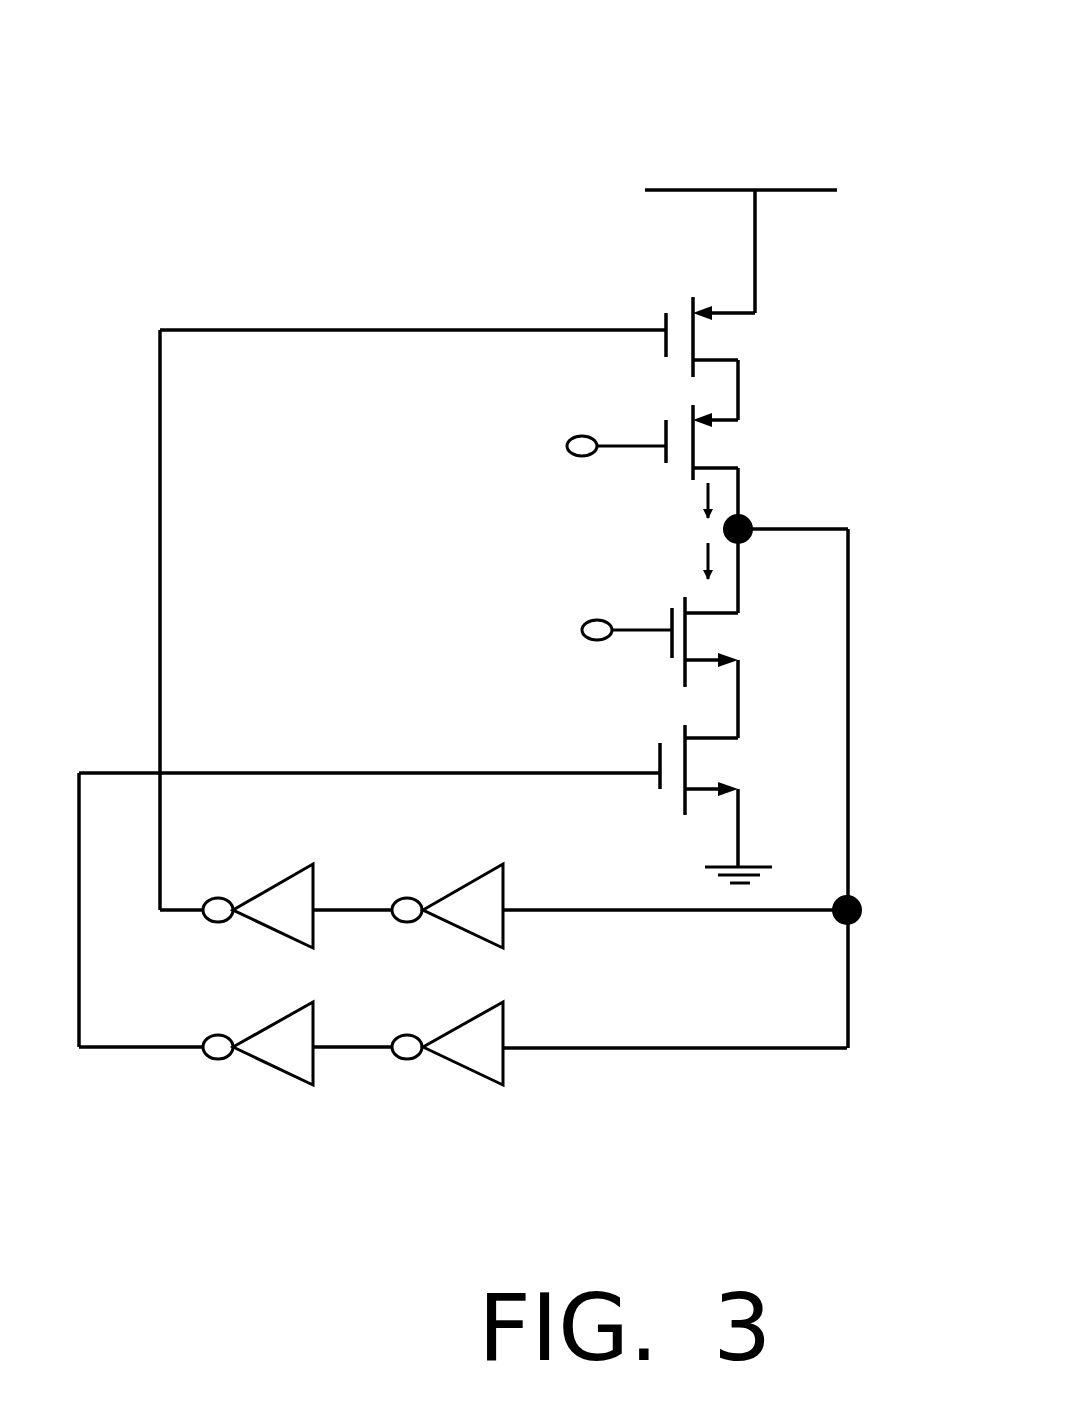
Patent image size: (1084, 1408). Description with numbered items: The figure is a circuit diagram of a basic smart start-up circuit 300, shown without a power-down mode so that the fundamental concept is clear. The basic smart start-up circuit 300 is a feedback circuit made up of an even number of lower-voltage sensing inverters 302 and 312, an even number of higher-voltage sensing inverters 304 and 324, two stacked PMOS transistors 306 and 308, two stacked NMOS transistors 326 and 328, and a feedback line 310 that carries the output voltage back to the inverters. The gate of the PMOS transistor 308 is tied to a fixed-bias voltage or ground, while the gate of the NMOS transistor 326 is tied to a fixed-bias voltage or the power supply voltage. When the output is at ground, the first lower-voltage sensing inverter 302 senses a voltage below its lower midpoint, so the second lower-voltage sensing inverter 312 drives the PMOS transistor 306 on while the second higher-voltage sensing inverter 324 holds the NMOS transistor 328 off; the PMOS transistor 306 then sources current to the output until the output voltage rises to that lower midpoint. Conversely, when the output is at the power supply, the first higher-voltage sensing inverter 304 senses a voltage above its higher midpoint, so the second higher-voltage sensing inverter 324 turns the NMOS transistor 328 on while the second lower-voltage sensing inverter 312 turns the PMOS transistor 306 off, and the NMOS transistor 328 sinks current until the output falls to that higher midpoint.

The basic smart start-up circuit 300 is at (645, 35).
The PMOS transistor 306 is at (753, 325).
The PMOS transistor 308 is at (738, 426).
The NMOS transistor 326 is at (735, 627).
The NMOS transistor 328 is at (735, 753).
The second lower-voltage sensing inverter 312 is at (283, 938).
The first lower-voltage sensing inverter 302 is at (455, 937).
The second higher-voltage sensing inverter 324 is at (258, 1063).
The first higher-voltage sensing inverter 304 is at (455, 1073).
The feedback line 310 is at (735, 1060).